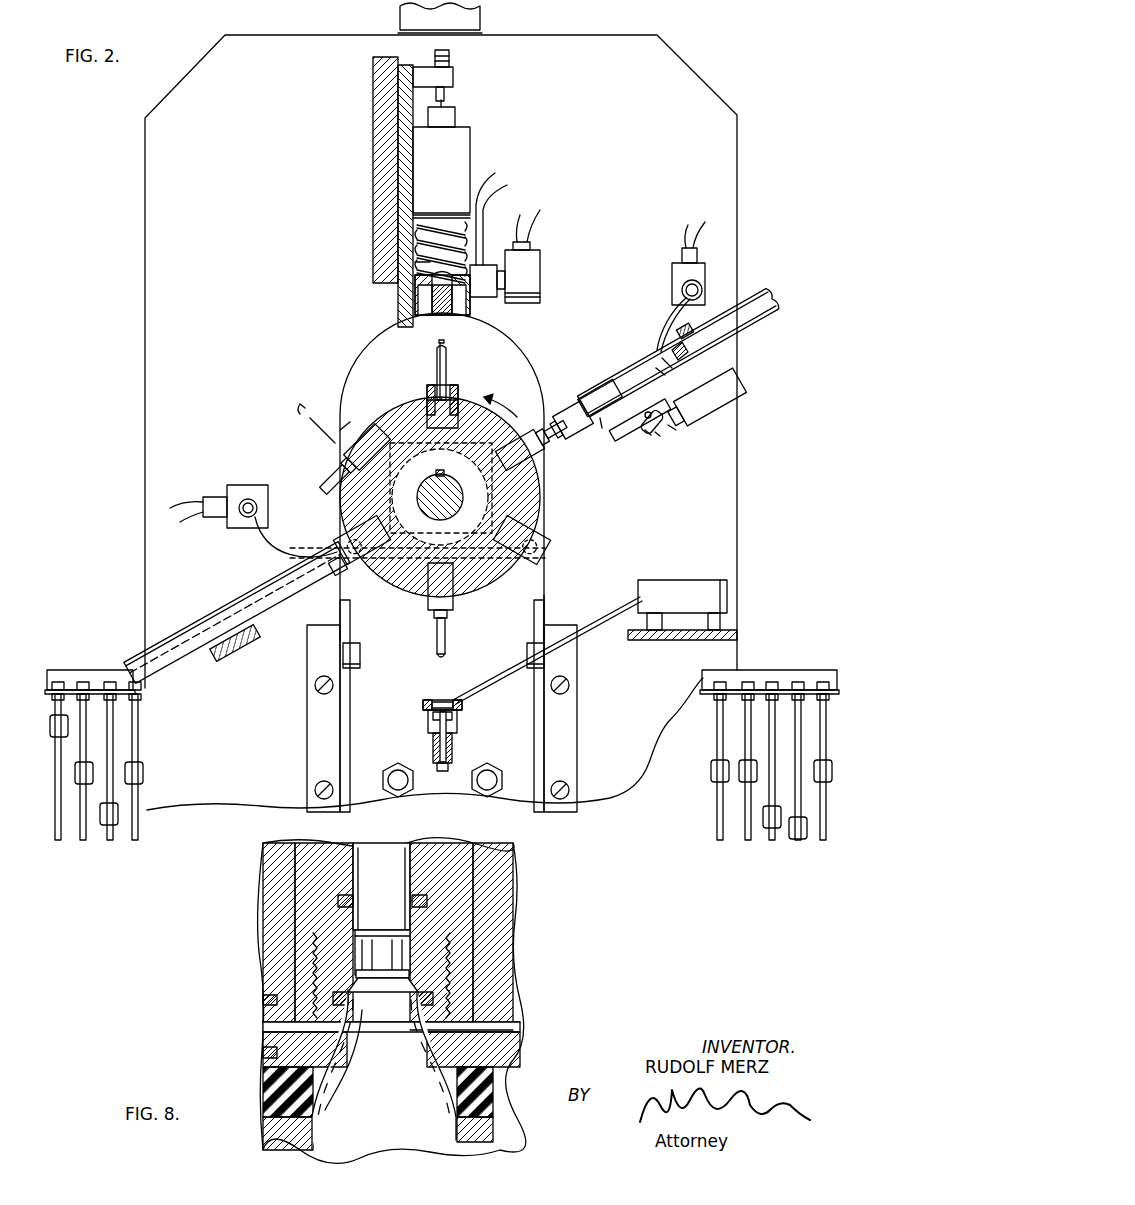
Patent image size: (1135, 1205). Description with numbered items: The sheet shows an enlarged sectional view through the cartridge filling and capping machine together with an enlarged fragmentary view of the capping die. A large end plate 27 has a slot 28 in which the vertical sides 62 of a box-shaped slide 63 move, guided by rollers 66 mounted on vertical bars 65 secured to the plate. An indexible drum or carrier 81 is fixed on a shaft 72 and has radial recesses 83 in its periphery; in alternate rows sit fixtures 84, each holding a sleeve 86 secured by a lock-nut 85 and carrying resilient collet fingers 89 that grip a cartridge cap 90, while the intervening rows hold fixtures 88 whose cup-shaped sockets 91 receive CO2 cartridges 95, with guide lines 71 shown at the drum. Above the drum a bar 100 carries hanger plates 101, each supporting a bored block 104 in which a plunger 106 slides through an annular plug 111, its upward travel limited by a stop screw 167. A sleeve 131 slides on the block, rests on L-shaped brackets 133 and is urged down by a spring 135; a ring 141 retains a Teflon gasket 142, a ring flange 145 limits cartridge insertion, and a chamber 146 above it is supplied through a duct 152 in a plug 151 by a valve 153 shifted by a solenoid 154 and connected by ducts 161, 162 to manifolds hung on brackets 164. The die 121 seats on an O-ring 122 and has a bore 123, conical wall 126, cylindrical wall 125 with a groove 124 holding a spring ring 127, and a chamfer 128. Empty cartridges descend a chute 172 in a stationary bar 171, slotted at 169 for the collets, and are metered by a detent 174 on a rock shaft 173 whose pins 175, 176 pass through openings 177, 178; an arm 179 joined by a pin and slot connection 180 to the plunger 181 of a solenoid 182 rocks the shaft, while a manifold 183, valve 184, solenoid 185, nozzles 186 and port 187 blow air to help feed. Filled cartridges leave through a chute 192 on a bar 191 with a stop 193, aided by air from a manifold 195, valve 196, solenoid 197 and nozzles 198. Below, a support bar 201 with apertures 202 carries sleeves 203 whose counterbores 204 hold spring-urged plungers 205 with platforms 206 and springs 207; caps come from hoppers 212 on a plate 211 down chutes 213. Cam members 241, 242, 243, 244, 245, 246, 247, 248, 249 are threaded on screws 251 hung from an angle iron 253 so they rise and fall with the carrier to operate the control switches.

In FIG. 2, the end plate 27 is at (145, 190).
In FIG. 2, the slot 28 is at (350, 360).
In FIG. 2, the vertically extending sides 62 is at (350, 604).
In FIG. 2, the box-shaped slide 63 is at (546, 590).
In FIG. 2, the vertically disposed bar 65 is at (307, 725).
In FIG. 2, the guide roller 66 is at (360, 651).
In FIG. 2, the guide lines 71 is at (546, 517).
In FIG. 2, the shaft 72 is at (452, 512).
In FIG. 2, the indexible drum or carrier 81 is at (382, 405).
In FIG. 2, the recess 83 is at (427, 395).
In FIG. 2, the fixture 84 is at (335, 462).
In FIG. 2, the lock-nut 85 is at (340, 440).
In FIG. 2, the sleeve 86 is at (310, 428).
In FIG. 2, the fixture 88 is at (427, 386).
In FIG. 2, the collet fingers 89 is at (458, 657).
In FIG. 8, the cartridge cap 90 is at (382, 940).
In FIG. 2, the socket 91 is at (484, 397).
In FIG. 2, the CO2 cartridge 95 is at (448, 352).
In FIG. 8, the CO2 cartridge 95 is at (425, 1140).
In FIG. 2, the bar 100 is at (373, 142).
In FIG. 2, the hanger plate 101 is at (398, 296).
In FIG. 2, the block 104 is at (470, 138).
In FIG. 2, the plunger 106 is at (445, 104).
In FIG. 8, the plunger 106 is at (400, 850).
In FIG. 2, the annular plug 111 is at (455, 112).
In FIG. 8, the die 121 is at (300, 908).
In FIG. 8, the O-ring 122 is at (440, 893).
In FIG. 8, the bore 123 is at (325, 915).
In FIG. 8, the annular groove 124 is at (455, 958).
In FIG. 8, the cylindrical wall portion 125 is at (440, 975).
In FIG. 8, the conical wall portion 126 is at (350, 980).
In FIG. 8, the spring ring 127 is at (436, 995).
In FIG. 8, the chamfer 128 is at (470, 1016).
In FIG. 2, the sleeve 131 is at (415, 238).
In FIG. 2, the L-shaped bracket 133 is at (415, 305).
In FIG. 2, the compression spring 135 is at (415, 262).
In FIG. 2, the ring 141 is at (455, 315).
In FIG. 8, the ring 141 is at (280, 1135).
In FIG. 2, the Teflon gasket 142 is at (435, 310).
In FIG. 8, the Teflon gasket 142 is at (263, 1080).
In FIG. 8, the ring flange 145 is at (428, 1062).
In FIG. 8, the chamber 146 is at (470, 1030).
In FIG. 8, the plug 151 is at (263, 1045).
In FIG. 8, the duct 152 is at (263, 1027).
In FIG. 2, the valve 153 is at (497, 298).
In FIG. 2, the solenoid 154 is at (540, 268).
In FIG. 2, the duct 161 is at (511, 219).
In FIG. 2, the duct 162 is at (502, 210).
In FIG. 2, the bracket 164 is at (480, 20).
In FIG. 2, the adjustable stop screw 167 is at (452, 50).
In FIG. 2, the slot 169 is at (602, 432).
In FIG. 2, the stationary bar 171 is at (692, 326).
In FIG. 2, the cartridge feeding tube or chute 172 is at (768, 295).
In FIG. 2, the rock shaft 173 is at (645, 433).
In FIG. 2, the detent 174 is at (623, 440).
In FIG. 2, the pin 175 is at (600, 390).
In FIG. 2, the pin 176 is at (672, 352).
In FIG. 2, the opening 177 is at (662, 360).
In FIG. 2, the opening 178 is at (656, 370).
In FIG. 2, the arm 179 is at (652, 440).
In FIG. 2, the pin and slot connection 180 is at (660, 437).
In FIG. 2, the plunger 181 is at (676, 432).
In FIG. 2, the solenoid 182 is at (740, 378).
In FIG. 2, the manifold 183 is at (682, 288).
In FIG. 2, the valve 184 is at (672, 268).
In FIG. 2, the solenoid 185 is at (682, 252).
In FIG. 2, the nozzle 186 is at (668, 312).
In FIG. 2, the port 187 is at (668, 338).
In FIG. 2, the stationary bar 191 is at (250, 642).
In FIG. 2, the tube or chute 192 is at (220, 620).
In FIG. 2, the stop 193 is at (335, 578).
In FIG. 2, the manifold 195 is at (258, 503).
In FIG. 2, the valve 196 is at (240, 485).
In FIG. 2, the solenoid 197 is at (210, 497).
In FIG. 2, the nozzle 198 is at (270, 542).
In FIG. 2, the support bar 201 is at (423, 706).
In FIG. 2, the aperture 202 is at (462, 706).
In FIG. 2, the sleeve 203 is at (452, 745).
In FIG. 2, the counterbore 204 is at (428, 722).
In FIG. 2, the plunger 205 is at (448, 758).
In FIG. 2, the head or platform 206 is at (457, 720).
In FIG. 2, the compression spring 207 is at (433, 740).
In FIG. 2, the stationary plate 211 is at (672, 640).
In FIG. 2, the hopper 212 is at (715, 580).
In FIG. 2, the chute 213 is at (598, 622).
In FIG. 2, the cam member 241 is at (68, 722).
In FIG. 2, the cam member 242 is at (93, 770).
In FIG. 2, the cam block 243 is at (118, 825).
In FIG. 2, the cam member 244 is at (143, 770).
In FIG. 2, the cam member 245 is at (711, 770).
In FIG. 2, the cam member 246 is at (740, 782).
In FIG. 2, the cam member 247 is at (765, 830).
In FIG. 2, the cam member 248 is at (802, 838).
In FIG. 2, the cam member 249 is at (830, 783).
In FIG. 2, the screw 251 is at (58, 840).
In FIG. 2, the angle iron 253 is at (92, 668).